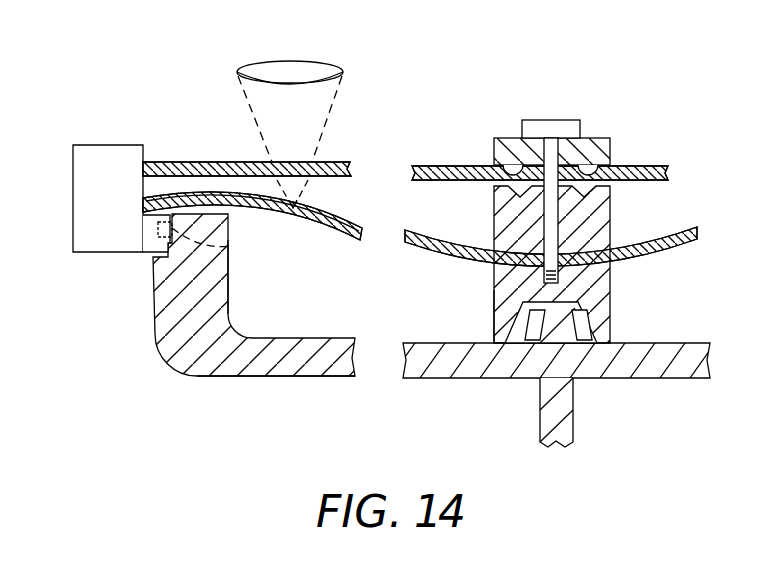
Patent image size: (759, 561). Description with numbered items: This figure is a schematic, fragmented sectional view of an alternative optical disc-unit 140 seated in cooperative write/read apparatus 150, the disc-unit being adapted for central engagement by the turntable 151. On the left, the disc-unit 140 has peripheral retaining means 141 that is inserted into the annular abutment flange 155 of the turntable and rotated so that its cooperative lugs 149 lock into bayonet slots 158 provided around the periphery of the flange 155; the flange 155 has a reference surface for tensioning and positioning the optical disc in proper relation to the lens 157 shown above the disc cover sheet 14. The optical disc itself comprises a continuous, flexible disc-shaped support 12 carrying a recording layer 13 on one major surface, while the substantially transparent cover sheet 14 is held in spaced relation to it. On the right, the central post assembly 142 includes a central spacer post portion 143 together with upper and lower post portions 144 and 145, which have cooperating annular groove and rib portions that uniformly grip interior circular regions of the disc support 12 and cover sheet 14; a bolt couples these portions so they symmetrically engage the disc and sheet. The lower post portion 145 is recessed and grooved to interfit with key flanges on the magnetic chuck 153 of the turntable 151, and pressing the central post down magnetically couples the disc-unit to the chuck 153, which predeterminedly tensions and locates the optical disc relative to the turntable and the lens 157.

The disc-shaped support 12 is at (332, 240).
The recording layer 13 is at (340, 214).
The disc cover sheet 14 is at (334, 162).
The disc-unit 140 is at (170, 115).
The peripheral retaining means 141 is at (73, 232).
The central post assembly 142 is at (620, 113).
The central spacer post portion 143 is at (492, 212).
The upper post portion 144 is at (492, 150).
The lower post portion 145 is at (492, 306).
The lugs 149 is at (150, 257).
The write/read apparatus 150 is at (242, 406).
The turntable 151 is at (335, 378).
The magnetic chuck 153 is at (580, 303).
The annular abutment flange 155 is at (229, 272).
The lens 157 is at (313, 82).
The bayonet slots 158 is at (232, 246).